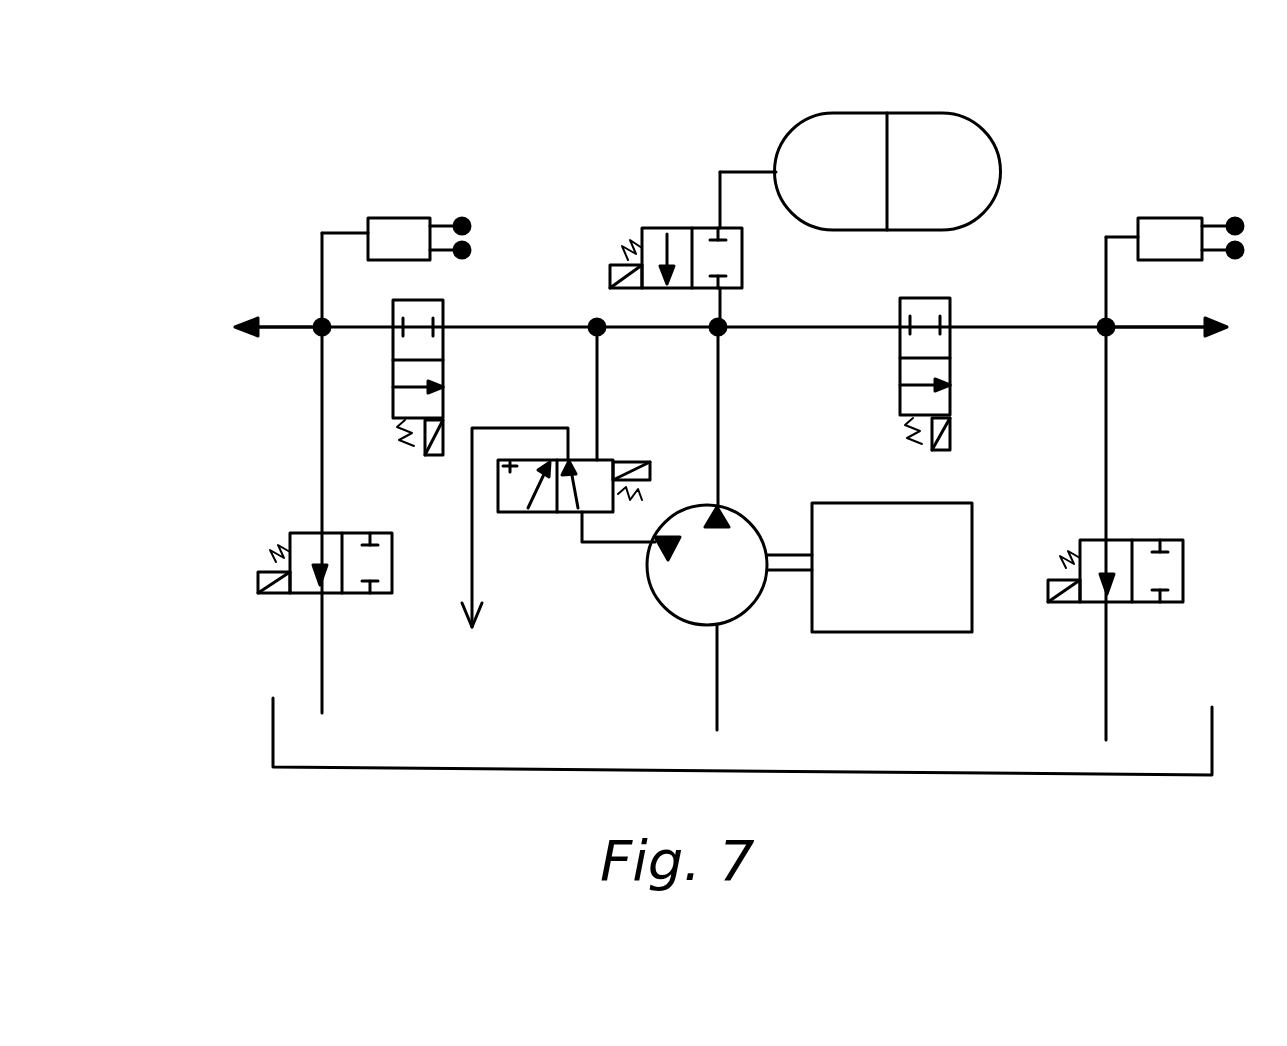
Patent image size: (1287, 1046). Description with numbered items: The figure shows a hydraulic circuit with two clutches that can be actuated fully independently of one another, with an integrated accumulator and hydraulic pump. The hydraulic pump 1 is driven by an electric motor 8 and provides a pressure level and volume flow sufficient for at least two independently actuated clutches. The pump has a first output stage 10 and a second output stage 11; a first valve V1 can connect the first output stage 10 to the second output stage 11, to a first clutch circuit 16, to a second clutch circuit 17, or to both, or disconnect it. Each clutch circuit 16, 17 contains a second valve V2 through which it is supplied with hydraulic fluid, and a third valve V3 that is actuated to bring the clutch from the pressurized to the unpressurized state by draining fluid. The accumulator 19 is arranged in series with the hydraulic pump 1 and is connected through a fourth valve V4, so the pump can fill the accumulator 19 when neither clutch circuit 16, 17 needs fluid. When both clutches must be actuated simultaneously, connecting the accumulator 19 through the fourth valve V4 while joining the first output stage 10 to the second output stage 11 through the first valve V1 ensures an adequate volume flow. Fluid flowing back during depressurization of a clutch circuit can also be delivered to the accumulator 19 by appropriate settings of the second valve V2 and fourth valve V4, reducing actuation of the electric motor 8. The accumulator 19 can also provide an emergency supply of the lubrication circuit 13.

The hydraulic pump 1 is at (752, 612).
The electric motor 8 is at (920, 632).
The first output stage 10 is at (603, 543).
The second output stage 11 is at (722, 452).
The lubrication circuit 13 is at (472, 552).
The first clutch circuit 16 is at (275, 320).
The second clutch circuit 17 is at (1168, 330).
The accumulator 19 is at (908, 113).
The first valve V1 is at (587, 419).
The second valve V2 is at (708, 376).
The third valve V3 is at (721, 567).
The fourth valve V4 is at (711, 259).